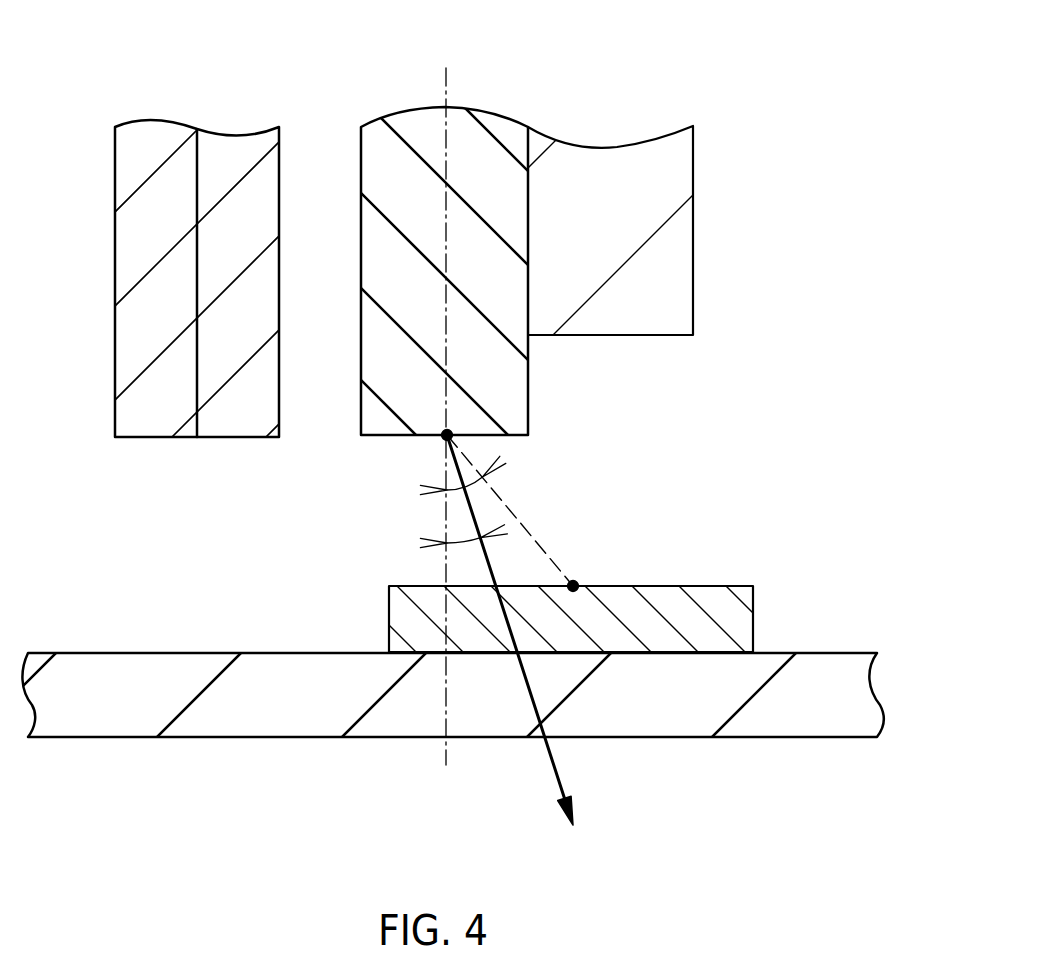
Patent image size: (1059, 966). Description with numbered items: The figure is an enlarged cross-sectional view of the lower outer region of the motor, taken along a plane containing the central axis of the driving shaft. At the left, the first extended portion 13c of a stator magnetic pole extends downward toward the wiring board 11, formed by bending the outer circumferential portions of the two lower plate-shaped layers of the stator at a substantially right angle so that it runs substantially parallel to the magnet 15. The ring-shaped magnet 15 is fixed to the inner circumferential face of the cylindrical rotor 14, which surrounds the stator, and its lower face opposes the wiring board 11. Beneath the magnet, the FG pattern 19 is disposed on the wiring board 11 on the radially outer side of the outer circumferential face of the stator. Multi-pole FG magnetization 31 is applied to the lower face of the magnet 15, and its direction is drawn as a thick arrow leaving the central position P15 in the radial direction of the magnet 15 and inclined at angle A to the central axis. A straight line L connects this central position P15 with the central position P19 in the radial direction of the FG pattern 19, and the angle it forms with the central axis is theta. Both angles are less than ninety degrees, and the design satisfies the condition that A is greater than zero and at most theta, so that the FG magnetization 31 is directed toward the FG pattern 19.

The wiring board 11 is at (843, 727).
The first extended portion 13c is at (228, 422).
The rotor 14 is at (598, 158).
The magnet 15 is at (503, 138).
The FG pattern 19 is at (703, 592).
The FG magnetization 31 is at (555, 772).
The central position in the radial direction of the magnet P15 is at (446, 438).
The central position in the radial direction of the FG pattern P19 is at (580, 580).
The straight line L is at (522, 521).
The angle A is at (455, 545).